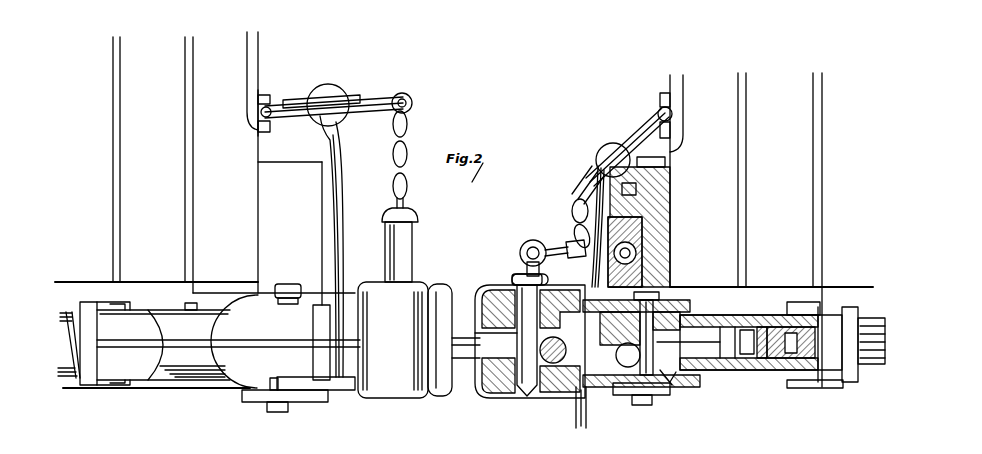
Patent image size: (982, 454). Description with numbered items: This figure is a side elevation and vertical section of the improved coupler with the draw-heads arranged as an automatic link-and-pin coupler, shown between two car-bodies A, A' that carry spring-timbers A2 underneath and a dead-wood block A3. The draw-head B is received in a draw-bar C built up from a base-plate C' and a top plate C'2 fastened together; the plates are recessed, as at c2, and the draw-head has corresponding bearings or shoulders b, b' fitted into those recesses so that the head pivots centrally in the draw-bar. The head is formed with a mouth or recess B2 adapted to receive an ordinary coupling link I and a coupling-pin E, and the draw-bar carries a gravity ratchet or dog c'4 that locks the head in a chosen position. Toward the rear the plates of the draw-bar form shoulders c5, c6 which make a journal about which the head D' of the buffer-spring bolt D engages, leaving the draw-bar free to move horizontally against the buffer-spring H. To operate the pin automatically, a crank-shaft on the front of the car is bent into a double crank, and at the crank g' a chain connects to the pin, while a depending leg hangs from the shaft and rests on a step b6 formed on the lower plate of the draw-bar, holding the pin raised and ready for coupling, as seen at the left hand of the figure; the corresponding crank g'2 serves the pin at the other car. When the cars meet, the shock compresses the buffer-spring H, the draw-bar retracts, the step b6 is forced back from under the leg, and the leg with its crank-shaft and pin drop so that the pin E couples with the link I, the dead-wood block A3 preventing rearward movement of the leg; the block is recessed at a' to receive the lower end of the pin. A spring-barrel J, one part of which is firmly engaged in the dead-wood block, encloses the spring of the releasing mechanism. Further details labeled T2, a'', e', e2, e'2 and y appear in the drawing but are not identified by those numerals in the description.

The car-body A is at (205, 168).
The car-body A' is at (771, 230).
The spring-timbers A2 is at (740, 372).
The dead-wood block A3 is at (660, 195).
The draw-head B is at (405, 340).
The mouth or recess B2 is at (490, 333).
The draw-bar C is at (211, 340).
The base-plate C' is at (457, 341).
The top plate C'2 is at (261, 329).
The gravity ratchet or dog c'4 is at (641, 333).
The recess c2 is at (335, 248).
The shoulder c5 is at (785, 352).
The shoulder c6 is at (747, 300).
The buffer-spring bolt D is at (530, 350).
The head of buffer-spring bolt D' is at (751, 311).
The coupling-pin E is at (403, 245).
The buffer-spring H is at (467, 353).
The link I is at (458, 369).
The spring-barrel J is at (630, 252).
The bracket T2 is at (286, 285).
The recess a' is at (629, 139).
The lever arm a'' is at (330, 110).
The crank g' is at (558, 225).
The chain g'2 is at (406, 140).
The cable e' is at (586, 226).
The valve stem e2 is at (512, 407).
The rod e'2 is at (623, 410).
The bearing or shoulder b is at (519, 331).
The bearing or shoulder b' is at (551, 406).
The step b6 is at (318, 388).
The lug y is at (673, 384).